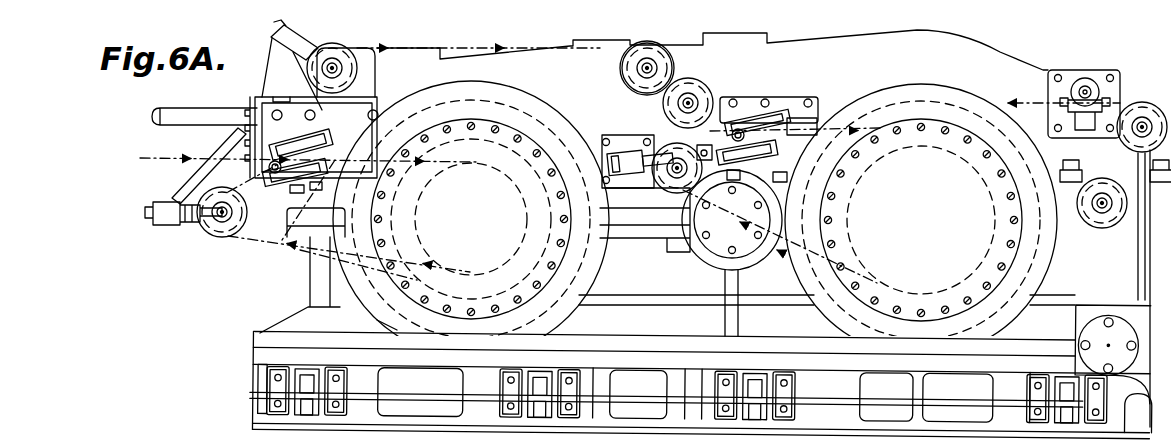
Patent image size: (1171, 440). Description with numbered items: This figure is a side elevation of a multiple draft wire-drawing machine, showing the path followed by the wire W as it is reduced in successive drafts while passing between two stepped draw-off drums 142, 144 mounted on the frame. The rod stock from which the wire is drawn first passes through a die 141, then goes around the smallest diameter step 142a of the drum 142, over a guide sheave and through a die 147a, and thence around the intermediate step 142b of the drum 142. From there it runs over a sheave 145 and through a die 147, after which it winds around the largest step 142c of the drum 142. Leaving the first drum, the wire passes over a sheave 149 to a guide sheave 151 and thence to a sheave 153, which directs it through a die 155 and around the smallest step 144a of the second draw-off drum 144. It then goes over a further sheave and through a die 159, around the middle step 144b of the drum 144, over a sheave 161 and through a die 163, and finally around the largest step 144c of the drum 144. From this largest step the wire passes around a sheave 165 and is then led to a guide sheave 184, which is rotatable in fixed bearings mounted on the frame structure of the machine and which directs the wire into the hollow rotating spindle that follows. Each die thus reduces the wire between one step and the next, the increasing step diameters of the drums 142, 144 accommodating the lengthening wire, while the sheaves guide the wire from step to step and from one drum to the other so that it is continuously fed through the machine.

The wire W is at (445, 47).
The die 141 is at (338, 156).
The stepped draw-off drum 142 is at (525, 102).
The smallest diameter step 142a is at (504, 179).
The intermediate step 142b is at (590, 240).
The largest step 142c is at (570, 118).
The stepped draw-off drum 144 is at (905, 93).
The smallest step 144a is at (950, 163).
The middle step 144b is at (963, 120).
The largest step 144c is at (1040, 283).
The sheave 145 is at (216, 237).
The die 147 is at (282, 162).
The die 147a is at (287, 235).
The sheave 149 is at (329, 44).
The guide sheave 151 is at (637, 80).
The sheave 153 is at (690, 86).
The die 155 is at (817, 130).
The die 159 is at (820, 123).
The sheave 161 is at (667, 193).
The die 163 is at (790, 120).
The sheave 165 is at (1150, 89).
The guide sheave 184 is at (1093, 178).